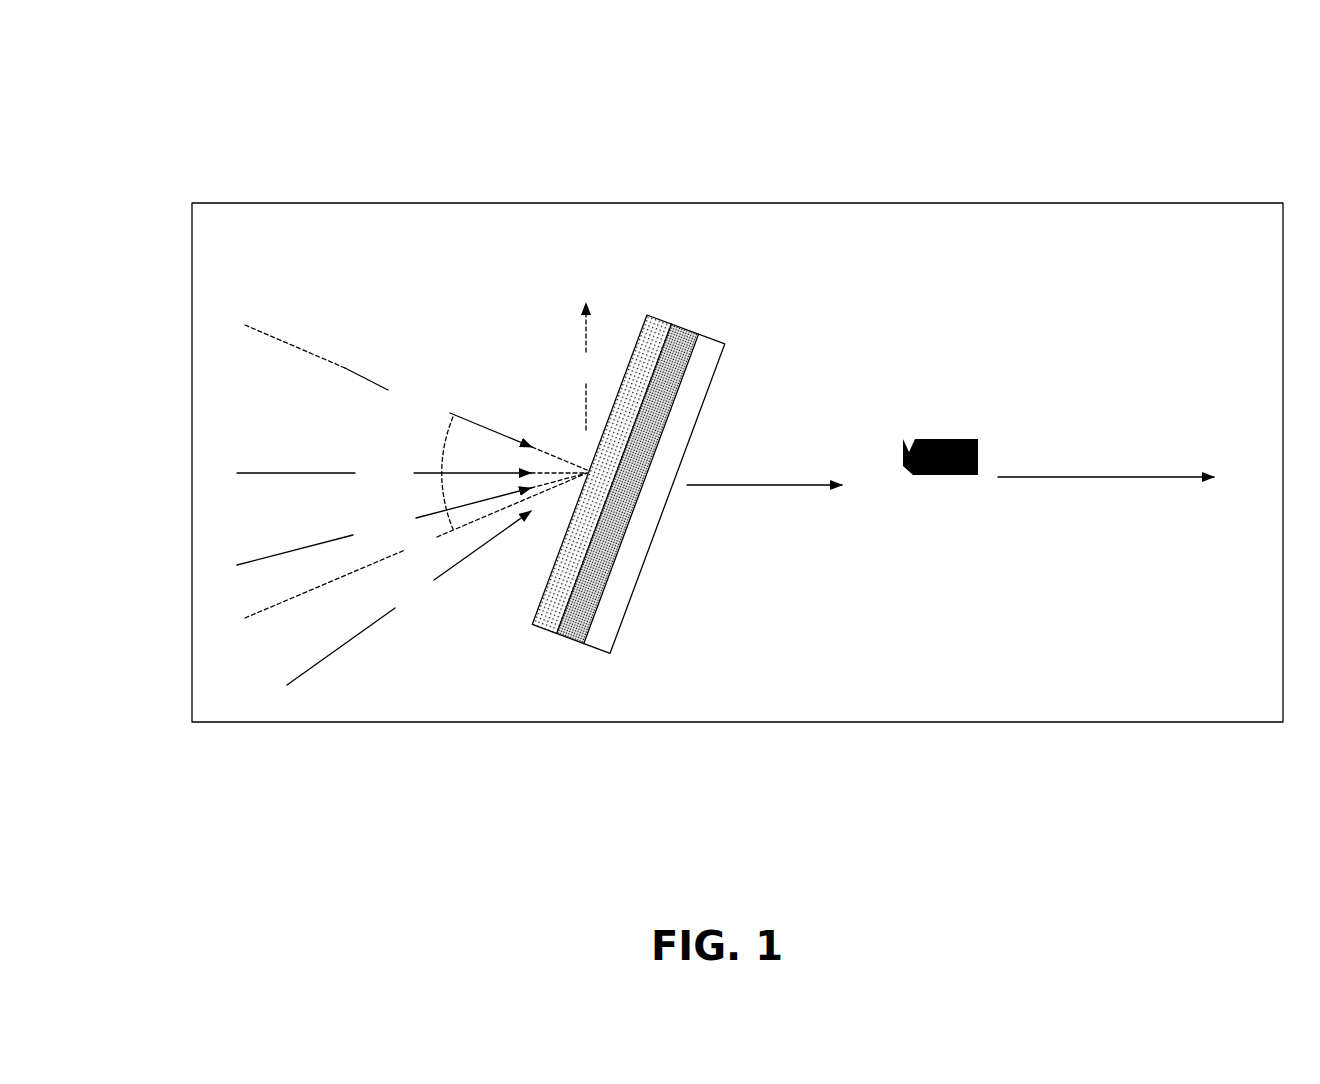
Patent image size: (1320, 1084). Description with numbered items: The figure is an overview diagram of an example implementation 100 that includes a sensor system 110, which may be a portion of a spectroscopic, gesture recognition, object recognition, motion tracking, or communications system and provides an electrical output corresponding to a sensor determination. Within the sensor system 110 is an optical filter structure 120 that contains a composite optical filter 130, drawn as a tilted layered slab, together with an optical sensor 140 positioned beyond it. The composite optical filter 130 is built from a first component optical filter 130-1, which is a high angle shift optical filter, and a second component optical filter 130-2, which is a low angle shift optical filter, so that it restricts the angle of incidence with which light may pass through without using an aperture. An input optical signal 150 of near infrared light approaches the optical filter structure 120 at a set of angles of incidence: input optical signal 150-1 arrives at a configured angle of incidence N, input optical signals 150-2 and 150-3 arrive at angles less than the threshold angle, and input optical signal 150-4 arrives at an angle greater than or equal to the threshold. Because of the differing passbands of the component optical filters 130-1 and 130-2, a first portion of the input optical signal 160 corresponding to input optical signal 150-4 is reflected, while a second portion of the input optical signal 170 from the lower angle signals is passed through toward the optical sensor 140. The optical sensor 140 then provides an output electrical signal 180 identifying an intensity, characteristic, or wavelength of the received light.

The example implementation 100 is at (212, 61).
The sensor system 110 is at (822, 203).
The optical filter structure 120 is at (722, 343).
The composite optical filter 130 is at (617, 475).
The first component optical filter 130-1 is at (601, 474).
The second component optical filter 130-2 is at (699, 307).
The optical sensor 140 is at (895, 434).
The input optical signal 150 is at (322, 276).
The input optical signal 150-1 is at (487, 430).
The input optical signal 150-2 is at (412, 473).
The input optical signal 150-3 is at (412, 519).
The input optical signal 150-4 is at (409, 598).
The first portion of the input optical signal 160 is at (592, 241).
The second portion of the input optical signal 170 is at (768, 551).
The output electrical signal 180 is at (1095, 411).